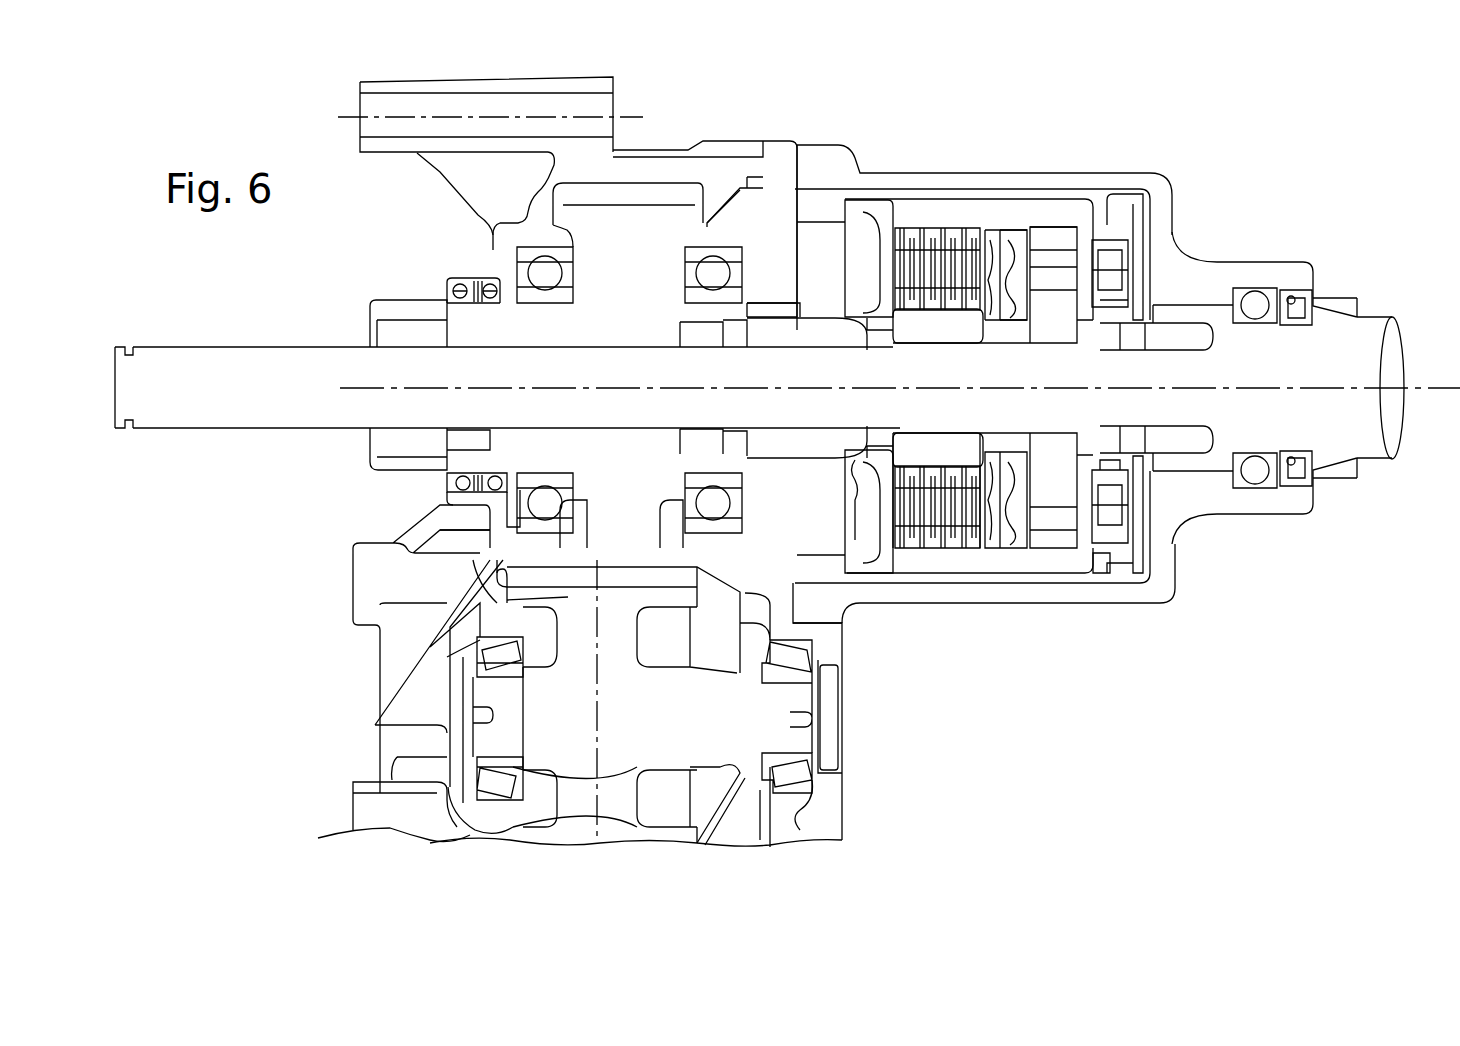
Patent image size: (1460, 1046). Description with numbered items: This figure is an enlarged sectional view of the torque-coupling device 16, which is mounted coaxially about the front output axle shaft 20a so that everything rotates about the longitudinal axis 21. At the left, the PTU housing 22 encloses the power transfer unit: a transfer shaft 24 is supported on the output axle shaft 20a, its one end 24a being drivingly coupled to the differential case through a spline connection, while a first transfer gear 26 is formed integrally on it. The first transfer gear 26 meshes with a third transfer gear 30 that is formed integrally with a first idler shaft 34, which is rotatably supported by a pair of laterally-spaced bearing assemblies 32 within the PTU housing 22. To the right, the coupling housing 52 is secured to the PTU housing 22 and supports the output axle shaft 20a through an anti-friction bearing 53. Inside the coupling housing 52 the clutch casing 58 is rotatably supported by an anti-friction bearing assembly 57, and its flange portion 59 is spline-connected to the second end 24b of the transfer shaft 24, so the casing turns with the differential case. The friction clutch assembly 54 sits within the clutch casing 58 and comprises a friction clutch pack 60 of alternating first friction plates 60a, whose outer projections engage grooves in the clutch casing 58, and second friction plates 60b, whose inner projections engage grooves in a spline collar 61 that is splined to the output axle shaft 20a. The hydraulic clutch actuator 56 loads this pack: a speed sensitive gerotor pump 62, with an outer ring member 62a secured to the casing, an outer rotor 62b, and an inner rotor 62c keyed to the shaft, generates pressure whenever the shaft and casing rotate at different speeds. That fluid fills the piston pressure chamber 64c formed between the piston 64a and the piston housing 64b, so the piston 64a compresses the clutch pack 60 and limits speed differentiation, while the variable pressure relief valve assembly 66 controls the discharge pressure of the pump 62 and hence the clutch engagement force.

The torque-coupling device 16 is at (951, 160).
The front output axle shaft 20a is at (187, 418).
The longitudinal axis 21 is at (1408, 386).
The PTU housing 22 is at (353, 782).
The transfer shaft 24 is at (498, 318).
The one end of transfer shaft 24a is at (395, 468).
The second end of transfer shaft 24b is at (755, 310).
The first transfer gear 26 is at (618, 253).
The third transfer gear 30 is at (447, 662).
The bearing assemblies 32 is at (820, 800).
The first idler shaft 34 is at (636, 703).
The coupling housing 52 is at (1185, 272).
The anti-friction bearing 53 is at (1253, 488).
The friction clutch assembly 54 is at (917, 214).
The hydraulic clutch actuator 56 is at (1083, 565).
The anti-friction bearing assembly 57 is at (1185, 458).
The clutch casing 58 is at (1140, 218).
The flange portion 59 is at (825, 330).
The friction clutch pack 60 is at (885, 519).
The first friction plates 60a is at (938, 550).
The second friction plates 60b is at (938, 312).
The spline collar 61 is at (950, 443).
The hydraulic pump 62 is at (1084, 454).
The outer ring member 62a is at (1050, 245).
The outer rotor 62b is at (1053, 504).
The inner rotor 62c is at (1053, 293).
The piston 64a is at (986, 240).
The piston housing 64b is at (1033, 237).
The piston pressure chamber 64c is at (1000, 477).
The variable pressure relief valve assembly 66 is at (1147, 535).